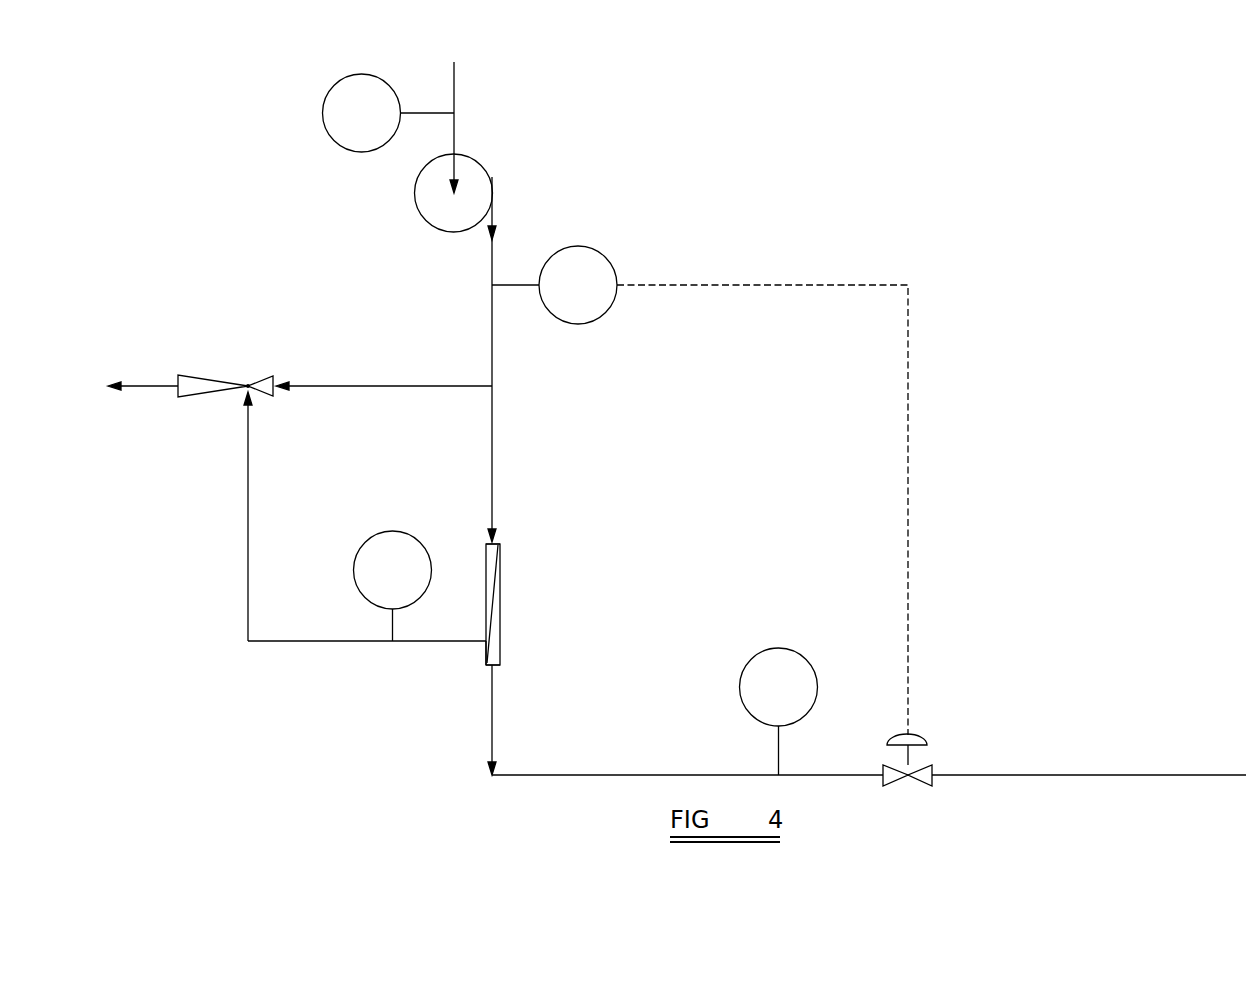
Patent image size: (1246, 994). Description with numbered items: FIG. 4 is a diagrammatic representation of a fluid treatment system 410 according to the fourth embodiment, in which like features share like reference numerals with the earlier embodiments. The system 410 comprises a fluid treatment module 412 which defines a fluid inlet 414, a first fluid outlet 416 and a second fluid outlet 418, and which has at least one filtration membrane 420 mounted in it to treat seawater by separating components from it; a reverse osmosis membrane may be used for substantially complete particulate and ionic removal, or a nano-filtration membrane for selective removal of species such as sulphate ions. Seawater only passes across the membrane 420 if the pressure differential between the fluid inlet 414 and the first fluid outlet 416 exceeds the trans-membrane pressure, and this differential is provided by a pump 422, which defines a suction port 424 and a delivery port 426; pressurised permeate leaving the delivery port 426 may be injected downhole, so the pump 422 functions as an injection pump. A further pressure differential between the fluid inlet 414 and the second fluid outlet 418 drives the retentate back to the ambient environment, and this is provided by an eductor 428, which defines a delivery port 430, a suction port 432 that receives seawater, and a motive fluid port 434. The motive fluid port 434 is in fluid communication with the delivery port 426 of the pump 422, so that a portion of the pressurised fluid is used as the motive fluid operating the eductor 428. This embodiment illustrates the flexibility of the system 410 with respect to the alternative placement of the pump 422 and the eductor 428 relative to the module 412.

The fluid treatment system 410 is at (1010, 338).
The fluid treatment module 412 is at (485, 560).
The fluid inlet 414 is at (493, 542).
The first fluid outlet 416 is at (493, 667).
The second fluid outlet 418 is at (487, 640).
The filtration membrane 420 is at (493, 613).
The pump 422 is at (492, 177).
The suction port 424 is at (454, 153).
The delivery port 426 is at (493, 232).
The eductor 428 is at (202, 377).
The delivery port 430 is at (175, 390).
The suction port 432 is at (250, 390).
The motive fluid port 434 is at (275, 375).